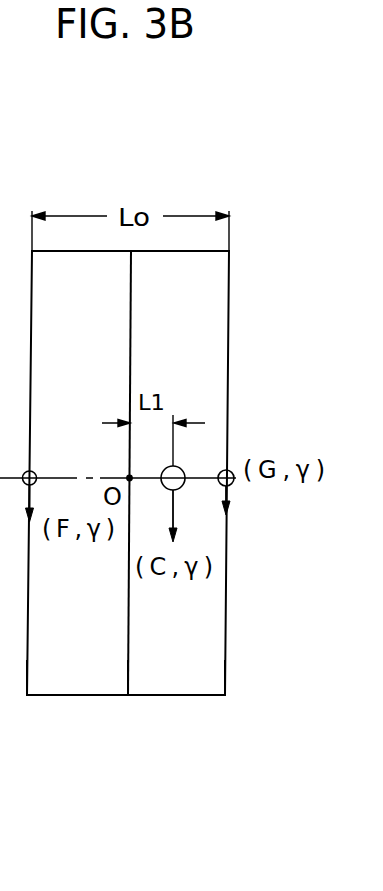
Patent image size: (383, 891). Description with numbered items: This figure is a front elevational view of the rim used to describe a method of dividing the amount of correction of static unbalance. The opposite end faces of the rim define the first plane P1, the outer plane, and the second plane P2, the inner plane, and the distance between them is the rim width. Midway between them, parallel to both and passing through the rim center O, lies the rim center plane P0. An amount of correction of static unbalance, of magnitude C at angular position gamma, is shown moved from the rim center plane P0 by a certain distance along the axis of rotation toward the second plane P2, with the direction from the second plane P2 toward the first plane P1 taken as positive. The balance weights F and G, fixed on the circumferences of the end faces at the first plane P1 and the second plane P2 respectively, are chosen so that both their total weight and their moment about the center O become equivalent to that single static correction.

The first plane P1 is at (27, 677).
The rim center plane P0 is at (127, 675).
The second plane P2 is at (225, 677).